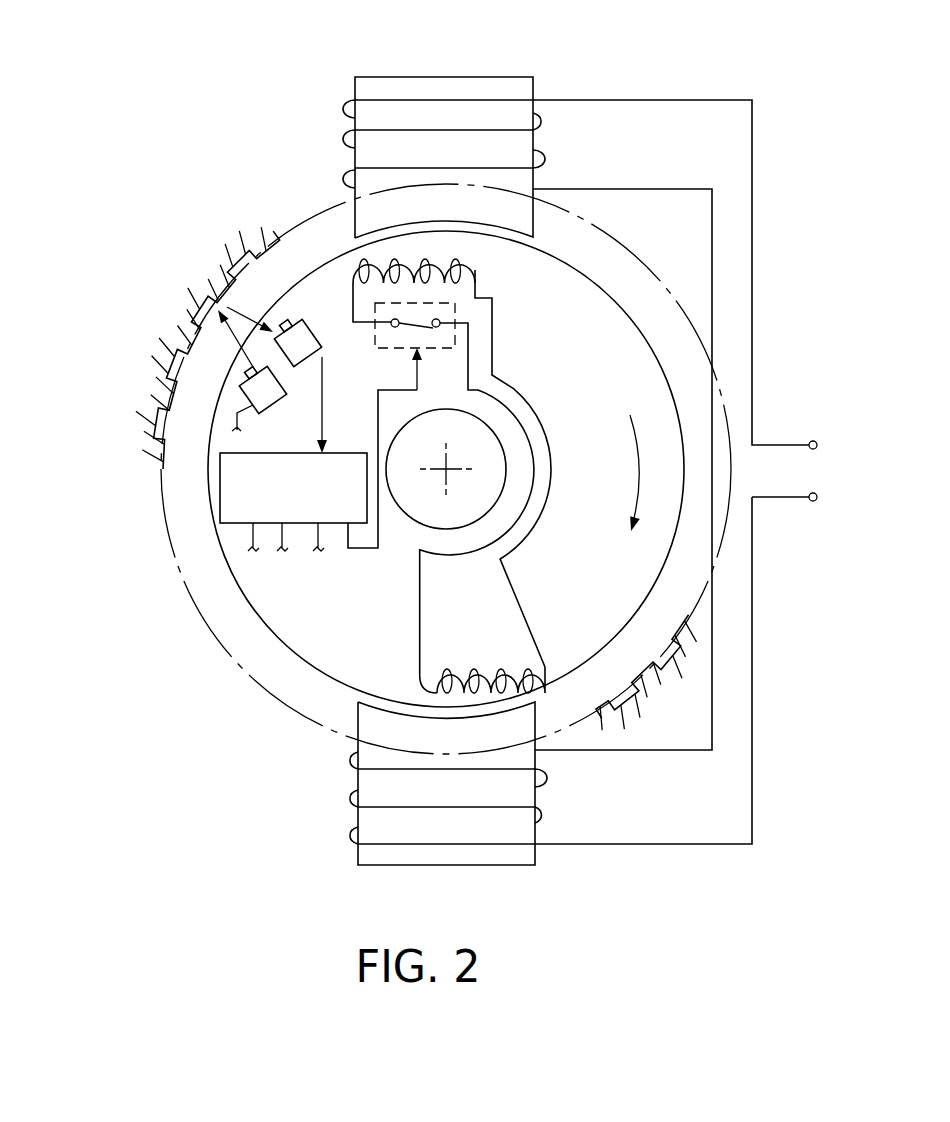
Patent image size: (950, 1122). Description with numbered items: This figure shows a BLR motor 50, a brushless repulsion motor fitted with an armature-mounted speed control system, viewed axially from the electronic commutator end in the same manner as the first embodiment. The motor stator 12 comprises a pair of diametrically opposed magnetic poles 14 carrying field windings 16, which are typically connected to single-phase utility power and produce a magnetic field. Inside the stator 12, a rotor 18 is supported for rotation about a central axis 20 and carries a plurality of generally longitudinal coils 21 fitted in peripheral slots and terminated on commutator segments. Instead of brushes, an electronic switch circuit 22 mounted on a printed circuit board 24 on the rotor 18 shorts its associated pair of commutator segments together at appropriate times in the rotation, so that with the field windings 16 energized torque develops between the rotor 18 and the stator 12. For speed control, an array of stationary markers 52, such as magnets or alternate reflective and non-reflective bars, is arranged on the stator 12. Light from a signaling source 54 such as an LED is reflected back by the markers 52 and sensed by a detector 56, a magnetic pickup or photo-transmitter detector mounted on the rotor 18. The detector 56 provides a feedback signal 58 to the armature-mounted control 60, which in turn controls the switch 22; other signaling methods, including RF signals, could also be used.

The BLR motor 50 is at (212, 92).
The motor stator 12 is at (144, 462).
The magnetic poles 14 is at (481, 84).
The field windings 16 is at (344, 134).
The rotor 18 is at (310, 673).
The central axis 20 is at (446, 469).
The coils 21 is at (453, 265).
The electronic switch circuit 22 is at (442, 350).
The printed circuit board 24 is at (290, 633).
The stationary markers 52 is at (167, 417).
The signaling source 54 is at (273, 400).
The detector 56 is at (300, 340).
The feedback signal 58 is at (323, 405).
The armature-mounted control 60 is at (297, 523).